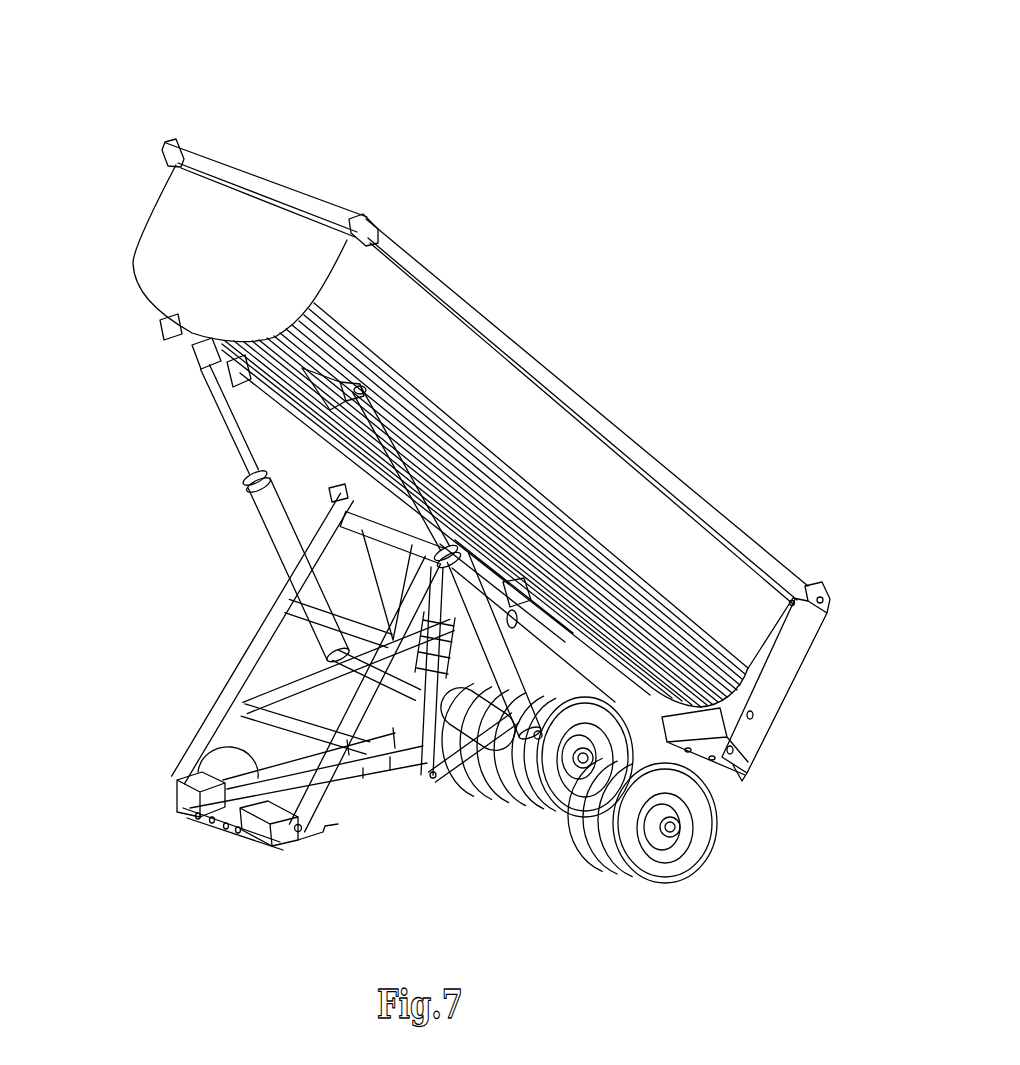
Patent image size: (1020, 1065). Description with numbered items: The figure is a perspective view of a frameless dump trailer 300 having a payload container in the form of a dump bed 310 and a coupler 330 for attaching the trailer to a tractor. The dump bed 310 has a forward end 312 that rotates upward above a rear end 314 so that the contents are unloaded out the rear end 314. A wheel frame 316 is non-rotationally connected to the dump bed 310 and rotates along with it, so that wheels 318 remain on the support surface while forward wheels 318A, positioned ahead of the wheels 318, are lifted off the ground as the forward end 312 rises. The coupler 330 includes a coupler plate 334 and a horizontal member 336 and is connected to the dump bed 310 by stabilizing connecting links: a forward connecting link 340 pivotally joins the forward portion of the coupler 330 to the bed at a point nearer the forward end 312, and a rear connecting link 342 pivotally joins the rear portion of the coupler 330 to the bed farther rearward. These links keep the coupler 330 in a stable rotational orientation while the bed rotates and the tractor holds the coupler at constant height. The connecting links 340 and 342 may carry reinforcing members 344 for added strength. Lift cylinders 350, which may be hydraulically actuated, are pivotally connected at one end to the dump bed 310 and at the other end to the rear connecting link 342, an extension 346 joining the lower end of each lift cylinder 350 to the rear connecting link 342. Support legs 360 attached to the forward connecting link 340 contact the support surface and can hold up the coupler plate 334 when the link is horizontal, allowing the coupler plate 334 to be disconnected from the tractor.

The frameless dump trailer 300 is at (437, 536).
The dump bed 310 is at (481, 407).
The forward end 312 is at (388, 239).
The rear end 314 is at (816, 590).
The wheel frame 316 is at (588, 666).
The wheels 318 is at (667, 878).
The forward wheels 318A is at (566, 855).
The coupler 330 is at (235, 884).
The coupler plate 334 is at (303, 838).
The horizontal member 336 is at (197, 762).
The forward connecting link 340 is at (261, 698).
The rear connecting link 342 is at (476, 818).
The reinforcing members 344 is at (270, 690).
The extension 346 is at (513, 828).
The lift cylinders 350 is at (280, 538).
The support legs 360 is at (603, 556).